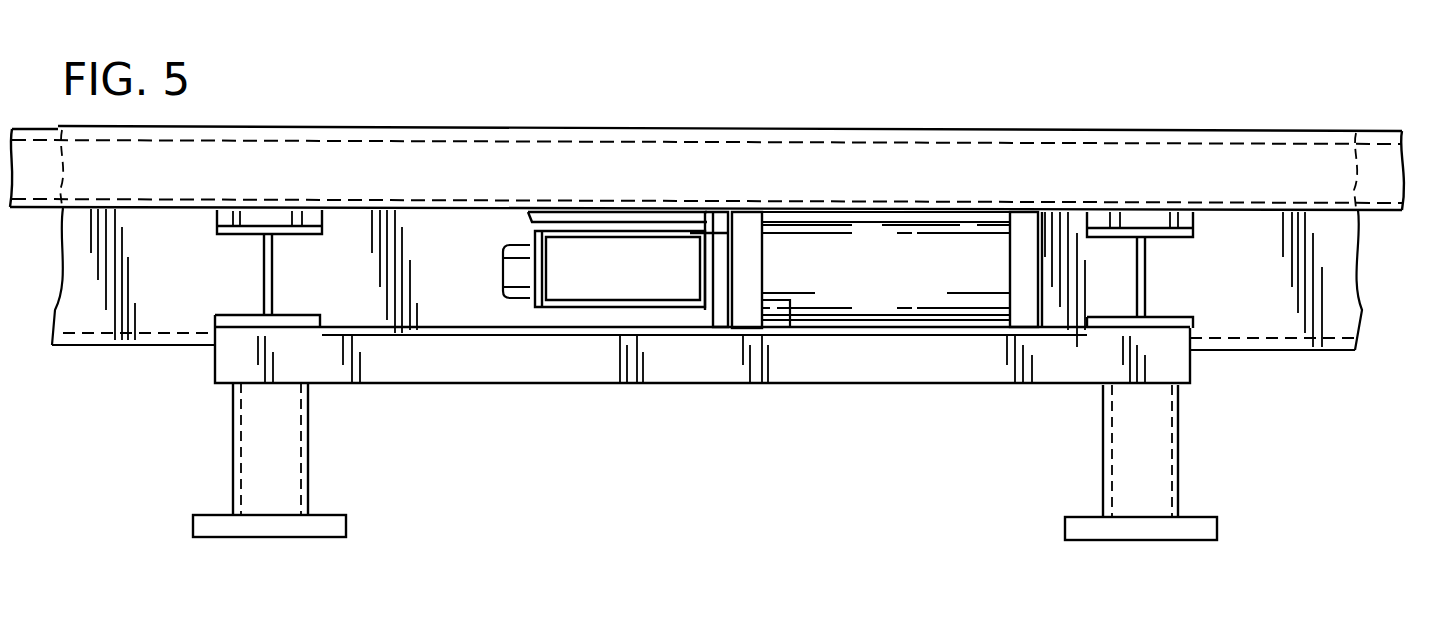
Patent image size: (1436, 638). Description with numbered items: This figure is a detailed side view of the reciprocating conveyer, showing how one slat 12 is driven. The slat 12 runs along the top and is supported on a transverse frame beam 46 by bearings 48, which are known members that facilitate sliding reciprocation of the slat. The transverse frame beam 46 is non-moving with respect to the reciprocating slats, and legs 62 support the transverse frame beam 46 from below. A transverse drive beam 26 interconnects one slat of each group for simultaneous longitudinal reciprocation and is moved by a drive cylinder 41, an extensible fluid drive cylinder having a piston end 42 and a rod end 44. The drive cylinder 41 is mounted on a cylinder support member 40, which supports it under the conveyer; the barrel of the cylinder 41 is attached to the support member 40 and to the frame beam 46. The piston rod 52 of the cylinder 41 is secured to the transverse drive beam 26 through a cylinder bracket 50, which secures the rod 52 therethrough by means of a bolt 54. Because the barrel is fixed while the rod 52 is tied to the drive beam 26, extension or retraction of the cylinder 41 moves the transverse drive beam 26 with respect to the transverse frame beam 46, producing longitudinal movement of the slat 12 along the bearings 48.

The slat 12 is at (702, 153).
The transverse drive beam 26 is at (603, 213).
The cylinder support member 40 is at (1184, 367).
The drive cylinder 41 is at (842, 308).
The piston end 42 is at (1002, 308).
The rod end 44 is at (772, 307).
The transverse frame beam 46 is at (274, 272).
The bearing 48 is at (224, 216).
The cylinder bracket 50 is at (597, 307).
The piston rod 52 is at (725, 293).
The bolt 54 is at (517, 290).
The leg 62 is at (292, 444).